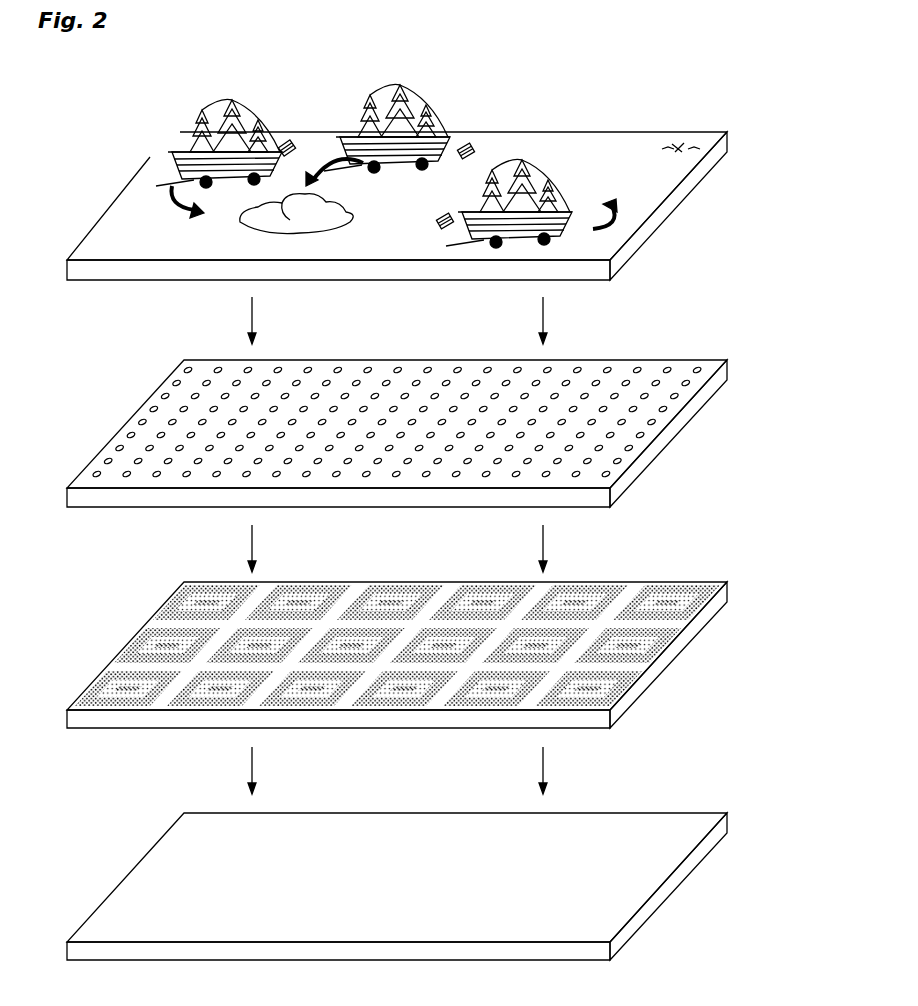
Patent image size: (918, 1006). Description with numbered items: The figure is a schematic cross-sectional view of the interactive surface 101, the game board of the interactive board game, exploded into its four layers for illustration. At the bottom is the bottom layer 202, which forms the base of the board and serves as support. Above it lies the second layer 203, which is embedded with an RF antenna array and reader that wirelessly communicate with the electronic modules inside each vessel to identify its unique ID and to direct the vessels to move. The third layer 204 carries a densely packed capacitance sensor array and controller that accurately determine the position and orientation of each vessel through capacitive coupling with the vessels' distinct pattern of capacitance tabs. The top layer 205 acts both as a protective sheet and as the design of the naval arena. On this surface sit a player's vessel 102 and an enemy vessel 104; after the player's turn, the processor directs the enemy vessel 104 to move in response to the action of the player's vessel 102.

The interactive surface 101 is at (728, 88).
The player's vessel 102 is at (147, 157).
The enemy vessel 104 is at (408, 94).
The bottom layer 202 is at (690, 889).
The second layer 203 is at (690, 663).
The third layer 204 is at (690, 443).
The top layer 205 is at (690, 203).